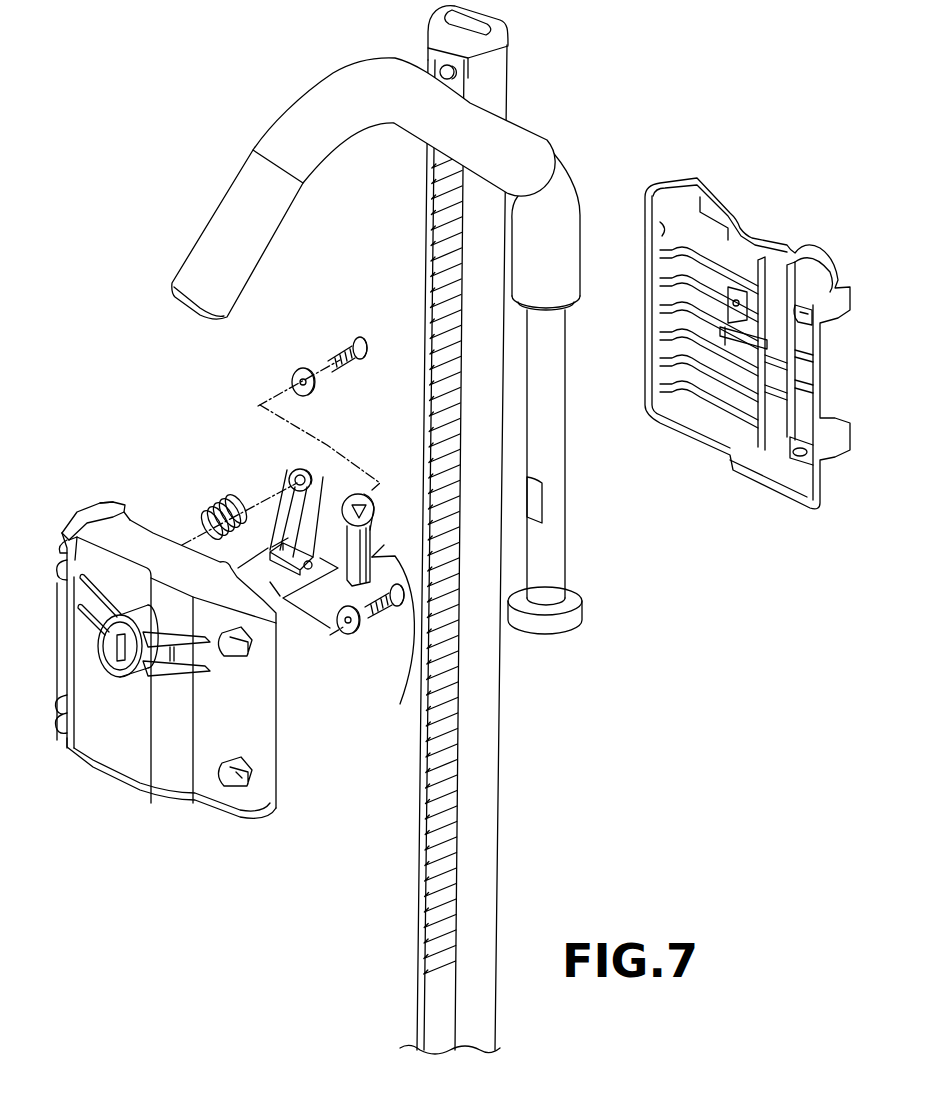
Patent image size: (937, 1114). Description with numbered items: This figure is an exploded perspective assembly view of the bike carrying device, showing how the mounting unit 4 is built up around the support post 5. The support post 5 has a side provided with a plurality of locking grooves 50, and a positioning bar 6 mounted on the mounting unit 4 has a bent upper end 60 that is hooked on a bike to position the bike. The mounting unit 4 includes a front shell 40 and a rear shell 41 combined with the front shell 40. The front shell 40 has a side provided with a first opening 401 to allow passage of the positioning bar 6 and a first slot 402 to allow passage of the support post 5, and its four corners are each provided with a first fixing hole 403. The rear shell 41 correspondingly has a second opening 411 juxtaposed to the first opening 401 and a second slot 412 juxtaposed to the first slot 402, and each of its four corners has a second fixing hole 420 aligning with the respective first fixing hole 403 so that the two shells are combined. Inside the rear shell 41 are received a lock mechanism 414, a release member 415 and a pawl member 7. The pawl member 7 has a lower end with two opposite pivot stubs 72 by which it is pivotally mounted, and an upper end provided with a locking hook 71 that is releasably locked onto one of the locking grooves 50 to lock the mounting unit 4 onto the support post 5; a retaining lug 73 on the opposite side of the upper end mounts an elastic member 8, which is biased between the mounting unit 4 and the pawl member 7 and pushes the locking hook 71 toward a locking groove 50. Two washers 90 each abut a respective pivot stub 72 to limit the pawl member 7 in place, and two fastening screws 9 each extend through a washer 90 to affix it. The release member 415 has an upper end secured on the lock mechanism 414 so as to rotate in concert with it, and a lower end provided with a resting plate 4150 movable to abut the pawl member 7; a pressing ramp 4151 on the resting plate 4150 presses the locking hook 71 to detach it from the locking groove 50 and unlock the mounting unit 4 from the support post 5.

The mounting unit 4 is at (257, 843).
The support post 5 is at (463, 530).
The positioning bar 6 is at (558, 473).
The pawl member 7 is at (265, 481).
The elastic member 8 is at (222, 506).
The fastening screw 9 is at (340, 352).
The front shell 40 is at (779, 304).
The rear shell 41 is at (138, 777).
The locking grooves 50 is at (437, 838).
The bent upper end 60 is at (350, 78).
The locking hook 71 is at (300, 440).
The pivot stub 72 is at (283, 598).
The retaining lug 73 is at (295, 472).
The washer 90 is at (291, 373).
The first opening 401 is at (790, 262).
The first slot 402 is at (713, 203).
The first fixing hole 403 is at (812, 320).
The second opening 411 is at (280, 605).
The second slot 412 is at (142, 527).
The lock mechanism 414 is at (130, 673).
The release member 415 is at (381, 527).
The second fixing hole 420 is at (237, 777).
The resting plate 4150 is at (400, 704).
The pressing ramp 4151 is at (384, 545).